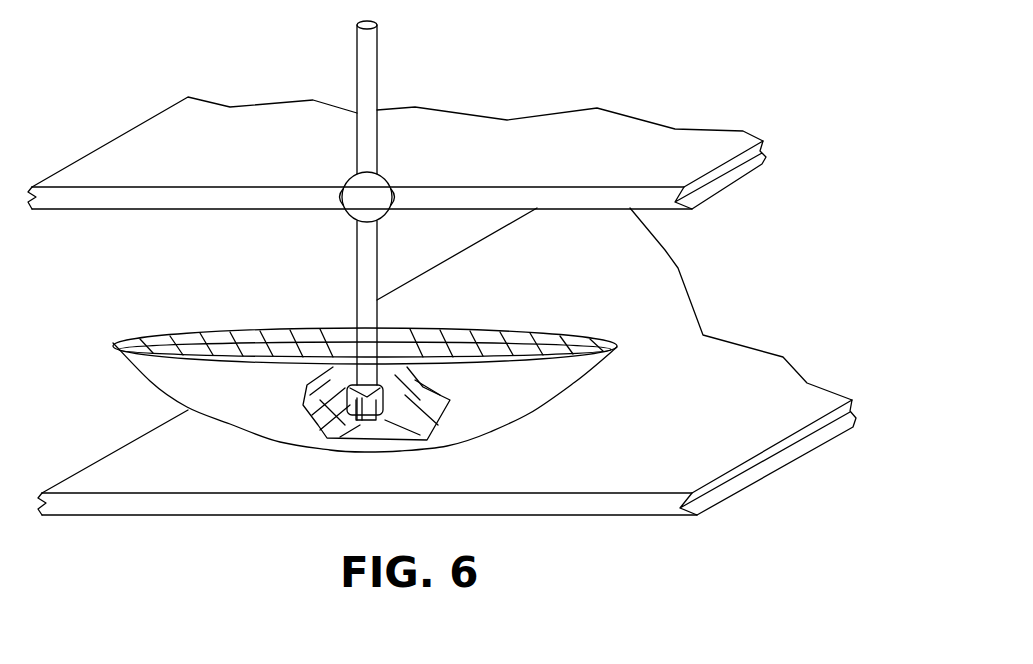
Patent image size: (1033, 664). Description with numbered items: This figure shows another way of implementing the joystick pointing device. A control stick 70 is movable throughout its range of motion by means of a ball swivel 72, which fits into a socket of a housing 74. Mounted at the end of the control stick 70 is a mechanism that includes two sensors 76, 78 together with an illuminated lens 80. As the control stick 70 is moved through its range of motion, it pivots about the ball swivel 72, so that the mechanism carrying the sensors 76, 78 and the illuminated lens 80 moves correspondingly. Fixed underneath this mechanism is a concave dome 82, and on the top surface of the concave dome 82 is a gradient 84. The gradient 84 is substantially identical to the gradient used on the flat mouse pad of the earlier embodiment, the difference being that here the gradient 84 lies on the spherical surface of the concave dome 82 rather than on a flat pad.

The control stick 70 is at (370, 70).
The ball swivel 72 is at (345, 183).
The housing 74 is at (638, 132).
The sensor 76 is at (340, 410).
The sensor 78 is at (425, 425).
The illuminated lens 80 is at (365, 430).
The concave dome 82 is at (153, 385).
The gradient 84 is at (215, 340).